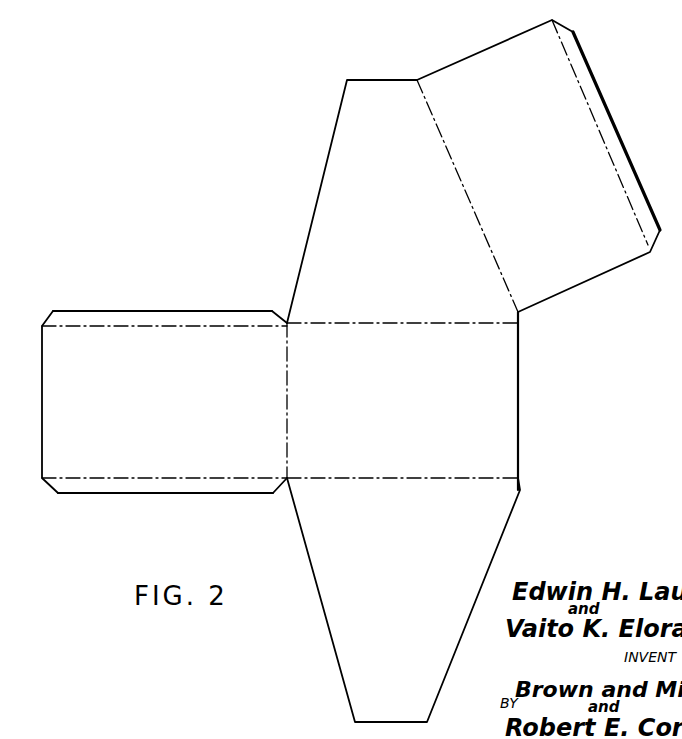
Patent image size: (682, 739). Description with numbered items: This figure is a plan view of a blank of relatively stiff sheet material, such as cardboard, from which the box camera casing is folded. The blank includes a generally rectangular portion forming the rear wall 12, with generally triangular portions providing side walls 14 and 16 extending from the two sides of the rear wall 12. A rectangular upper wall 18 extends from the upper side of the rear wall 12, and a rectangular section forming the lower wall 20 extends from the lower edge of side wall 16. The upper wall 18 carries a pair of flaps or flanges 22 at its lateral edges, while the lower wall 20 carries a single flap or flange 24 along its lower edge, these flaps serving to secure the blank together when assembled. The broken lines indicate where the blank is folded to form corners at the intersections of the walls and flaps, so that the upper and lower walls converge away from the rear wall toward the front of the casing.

The rear wall 12 is at (410, 405).
The side wall 14 is at (405, 576).
The side wall 16 is at (388, 210).
The upper wall 18 is at (178, 406).
The lower wall 20 is at (542, 170).
The flaps 22 is at (163, 311).
The flap 24 is at (623, 160).